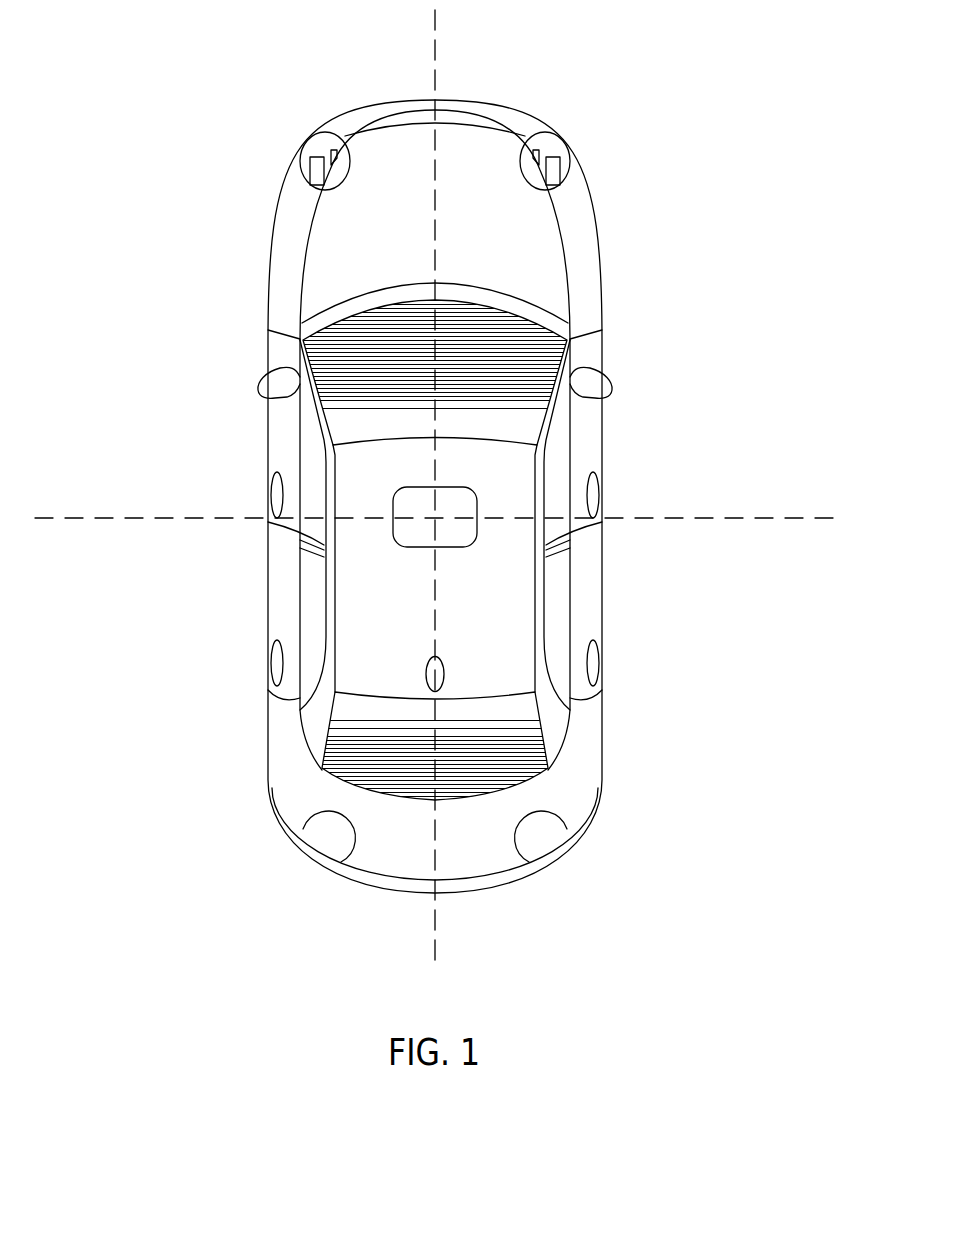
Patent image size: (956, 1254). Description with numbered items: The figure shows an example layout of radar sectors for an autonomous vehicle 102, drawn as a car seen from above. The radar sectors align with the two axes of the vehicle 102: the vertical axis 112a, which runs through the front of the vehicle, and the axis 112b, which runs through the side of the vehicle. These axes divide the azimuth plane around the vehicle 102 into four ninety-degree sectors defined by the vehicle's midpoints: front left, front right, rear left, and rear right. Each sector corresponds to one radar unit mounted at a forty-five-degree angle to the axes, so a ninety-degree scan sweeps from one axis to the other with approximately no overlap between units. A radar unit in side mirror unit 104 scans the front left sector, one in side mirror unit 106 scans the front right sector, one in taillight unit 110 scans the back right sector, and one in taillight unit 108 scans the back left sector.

The autonomous vehicle 102 is at (380, 103).
The side mirror unit 104 is at (270, 375).
The side mirror unit 106 is at (602, 373).
The taillight unit 108 is at (322, 838).
The taillight unit 110 is at (560, 833).
The vertical axis 112a is at (435, 937).
The axis 112b is at (160, 520).